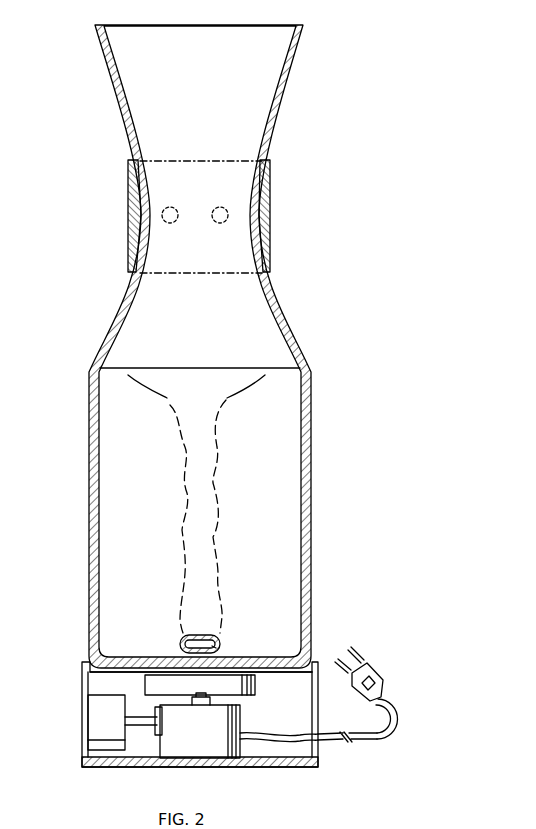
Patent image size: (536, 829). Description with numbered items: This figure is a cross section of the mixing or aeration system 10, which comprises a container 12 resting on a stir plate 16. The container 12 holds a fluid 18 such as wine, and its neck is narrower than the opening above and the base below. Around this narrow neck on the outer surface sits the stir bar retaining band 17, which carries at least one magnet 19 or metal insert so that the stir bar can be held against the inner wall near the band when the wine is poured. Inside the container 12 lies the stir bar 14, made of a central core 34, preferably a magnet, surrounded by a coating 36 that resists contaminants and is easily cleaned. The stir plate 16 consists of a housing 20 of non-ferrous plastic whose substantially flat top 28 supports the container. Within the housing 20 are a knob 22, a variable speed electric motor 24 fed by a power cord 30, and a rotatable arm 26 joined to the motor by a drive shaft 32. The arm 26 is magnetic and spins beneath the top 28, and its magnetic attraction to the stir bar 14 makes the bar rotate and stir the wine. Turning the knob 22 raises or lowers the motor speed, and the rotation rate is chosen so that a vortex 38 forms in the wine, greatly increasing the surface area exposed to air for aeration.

The mixing or aeration system 10 is at (236, 396).
The container 12 is at (86, 558).
The stir bar 14 is at (199, 629).
The stir plate 16 is at (182, 693).
The stir bar retaining band 17 is at (119, 241).
The fluid 18 is at (222, 367).
The magnet 19 is at (268, 212).
The housing 20 is at (320, 712).
The knob 22 is at (86, 718).
The electric motor 24 is at (243, 728).
The rotatable arm 26 is at (257, 685).
The top 28 is at (270, 662).
The power cord 30 is at (332, 694).
The drive shaft 32 is at (201, 704).
The central core 34 is at (197, 638).
The coating 36 is at (222, 644).
The vortex 38 is at (172, 405).